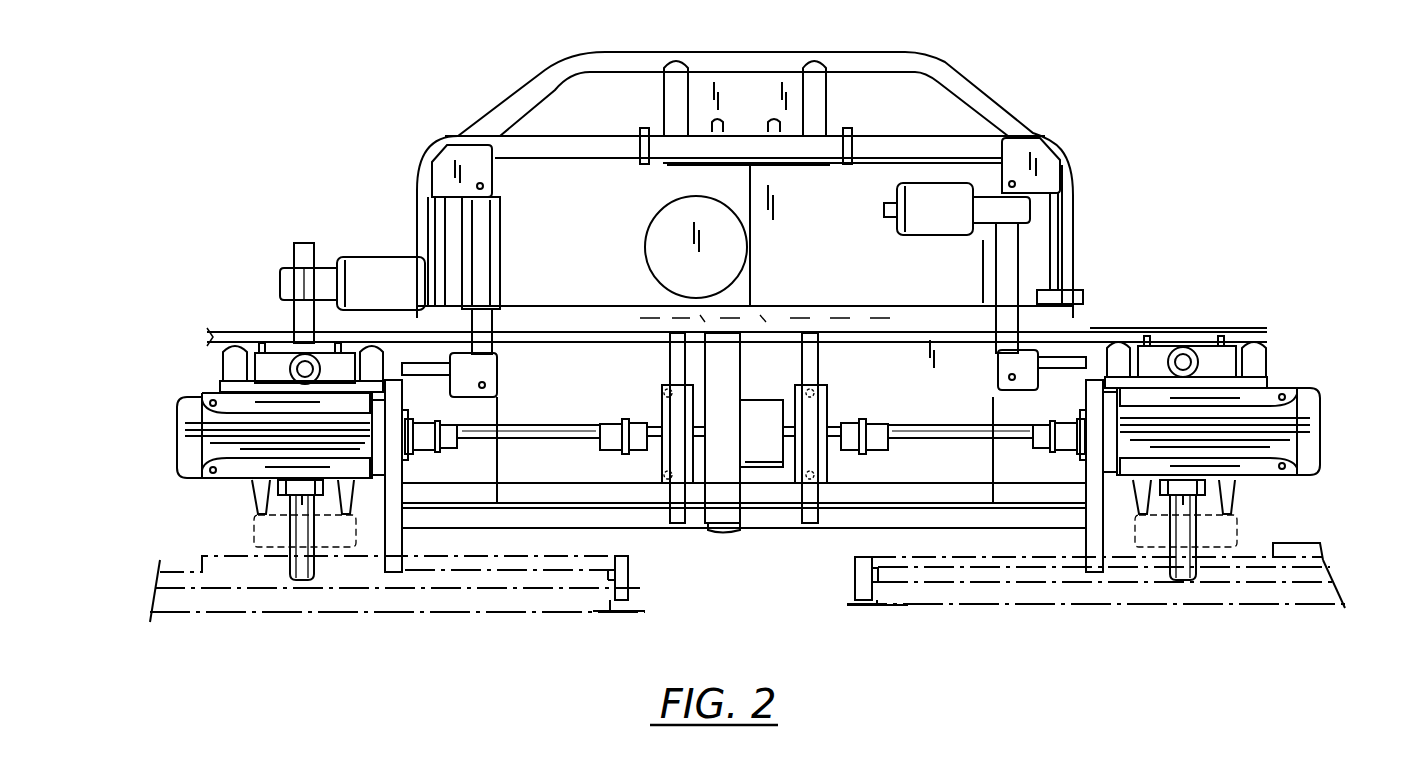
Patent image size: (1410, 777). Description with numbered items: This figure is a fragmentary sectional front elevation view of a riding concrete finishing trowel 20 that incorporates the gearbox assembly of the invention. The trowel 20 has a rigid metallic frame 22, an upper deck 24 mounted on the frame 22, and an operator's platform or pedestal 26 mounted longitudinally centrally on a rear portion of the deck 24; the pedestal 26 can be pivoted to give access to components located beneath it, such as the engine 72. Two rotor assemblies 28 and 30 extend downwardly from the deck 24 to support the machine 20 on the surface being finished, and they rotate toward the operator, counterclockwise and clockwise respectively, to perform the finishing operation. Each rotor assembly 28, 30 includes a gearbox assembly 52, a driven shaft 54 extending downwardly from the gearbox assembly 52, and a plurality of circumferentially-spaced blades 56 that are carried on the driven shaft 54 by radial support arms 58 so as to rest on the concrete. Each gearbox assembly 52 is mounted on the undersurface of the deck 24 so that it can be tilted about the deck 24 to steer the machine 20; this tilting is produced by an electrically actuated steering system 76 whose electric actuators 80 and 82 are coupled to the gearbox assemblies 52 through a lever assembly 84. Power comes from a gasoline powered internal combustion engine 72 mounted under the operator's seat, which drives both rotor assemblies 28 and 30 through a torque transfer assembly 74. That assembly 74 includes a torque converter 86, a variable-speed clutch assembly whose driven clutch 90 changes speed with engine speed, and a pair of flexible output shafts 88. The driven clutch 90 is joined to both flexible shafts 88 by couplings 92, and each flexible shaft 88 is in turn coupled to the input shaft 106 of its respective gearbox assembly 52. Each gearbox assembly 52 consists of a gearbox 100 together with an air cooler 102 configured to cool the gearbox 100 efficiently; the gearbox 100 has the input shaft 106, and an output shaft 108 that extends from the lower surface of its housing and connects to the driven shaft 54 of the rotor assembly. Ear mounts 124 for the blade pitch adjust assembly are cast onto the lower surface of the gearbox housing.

The riding concrete finishing trowel 20 is at (1080, 103).
The frame 22 is at (818, 363).
The upper deck 24 is at (1182, 331).
The operator's platform or pedestal 26 is at (530, 87).
The rotor assembly 28 is at (196, 489).
The rotor assembly 30 is at (1328, 362).
The gearbox assembly 52 is at (173, 432).
The driven shaft 54 is at (298, 525).
The blades 56 is at (607, 613).
The radial support arms 58 is at (630, 572).
The engine 72 is at (843, 222).
The torque transfer assembly 74 is at (668, 370).
The steering system 76 is at (272, 298).
The electric actuator 80 is at (393, 285).
The electric actuator 82 is at (452, 158).
The lever assembly 84 is at (272, 368).
The torque converter 86 is at (740, 371).
The flexible output shafts 88 is at (562, 408).
The driven clutch 90 is at (732, 526).
The couplings 92 is at (455, 448).
The gearbox 100 is at (392, 460).
The air cooler 102 is at (215, 401).
The input shaft 106 is at (407, 452).
The output shaft 108 is at (313, 497).
The ear mounts 124 is at (256, 497).